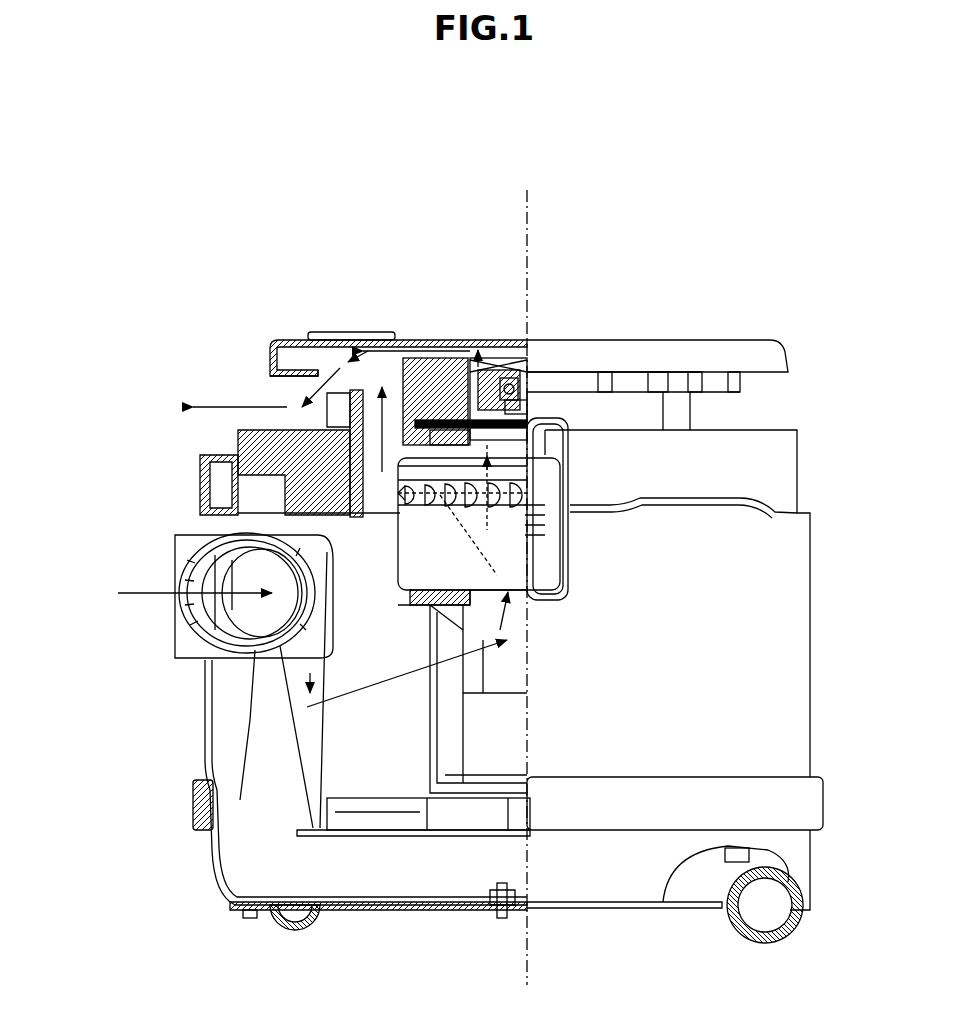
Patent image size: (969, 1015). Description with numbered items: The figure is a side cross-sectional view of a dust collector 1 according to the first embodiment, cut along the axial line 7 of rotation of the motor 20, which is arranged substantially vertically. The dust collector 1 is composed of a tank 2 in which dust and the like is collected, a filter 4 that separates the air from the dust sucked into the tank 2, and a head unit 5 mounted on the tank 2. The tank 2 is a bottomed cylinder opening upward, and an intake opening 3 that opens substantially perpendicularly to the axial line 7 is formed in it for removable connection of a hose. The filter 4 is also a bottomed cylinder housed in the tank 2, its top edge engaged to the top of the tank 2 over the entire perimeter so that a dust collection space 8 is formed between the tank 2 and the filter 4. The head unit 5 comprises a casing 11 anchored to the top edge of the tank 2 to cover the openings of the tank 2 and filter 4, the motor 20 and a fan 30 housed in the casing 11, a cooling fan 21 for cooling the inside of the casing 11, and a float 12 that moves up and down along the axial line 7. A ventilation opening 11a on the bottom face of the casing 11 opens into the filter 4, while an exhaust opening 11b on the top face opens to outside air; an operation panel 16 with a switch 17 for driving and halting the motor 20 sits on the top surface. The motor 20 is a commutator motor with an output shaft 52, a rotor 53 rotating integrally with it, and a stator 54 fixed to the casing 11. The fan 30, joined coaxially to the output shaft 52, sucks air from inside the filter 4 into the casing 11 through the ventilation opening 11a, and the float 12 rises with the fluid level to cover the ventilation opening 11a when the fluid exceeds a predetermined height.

The dust collector 1 is at (118, 163).
The tank 2 is at (150, 882).
The intake opening 3 is at (178, 613).
The filter 4 is at (290, 738).
The head unit 5 is at (150, 265).
The axial line 7 is at (530, 200).
The dust collection space 8 is at (403, 880).
The casing 11 is at (272, 372).
The ventilation opening 11a is at (520, 598).
The exhaust opening 11b is at (272, 387).
The float 12 is at (515, 733).
The operation panel 16 is at (352, 326).
The switch 17 is at (325, 331).
The motor 20 is at (455, 275).
The cooling fan 21 is at (504, 340).
The fan 30 is at (515, 540).
The output shaft 52 is at (530, 360).
The rotor 53 is at (536, 410).
The stator 54 is at (417, 398).